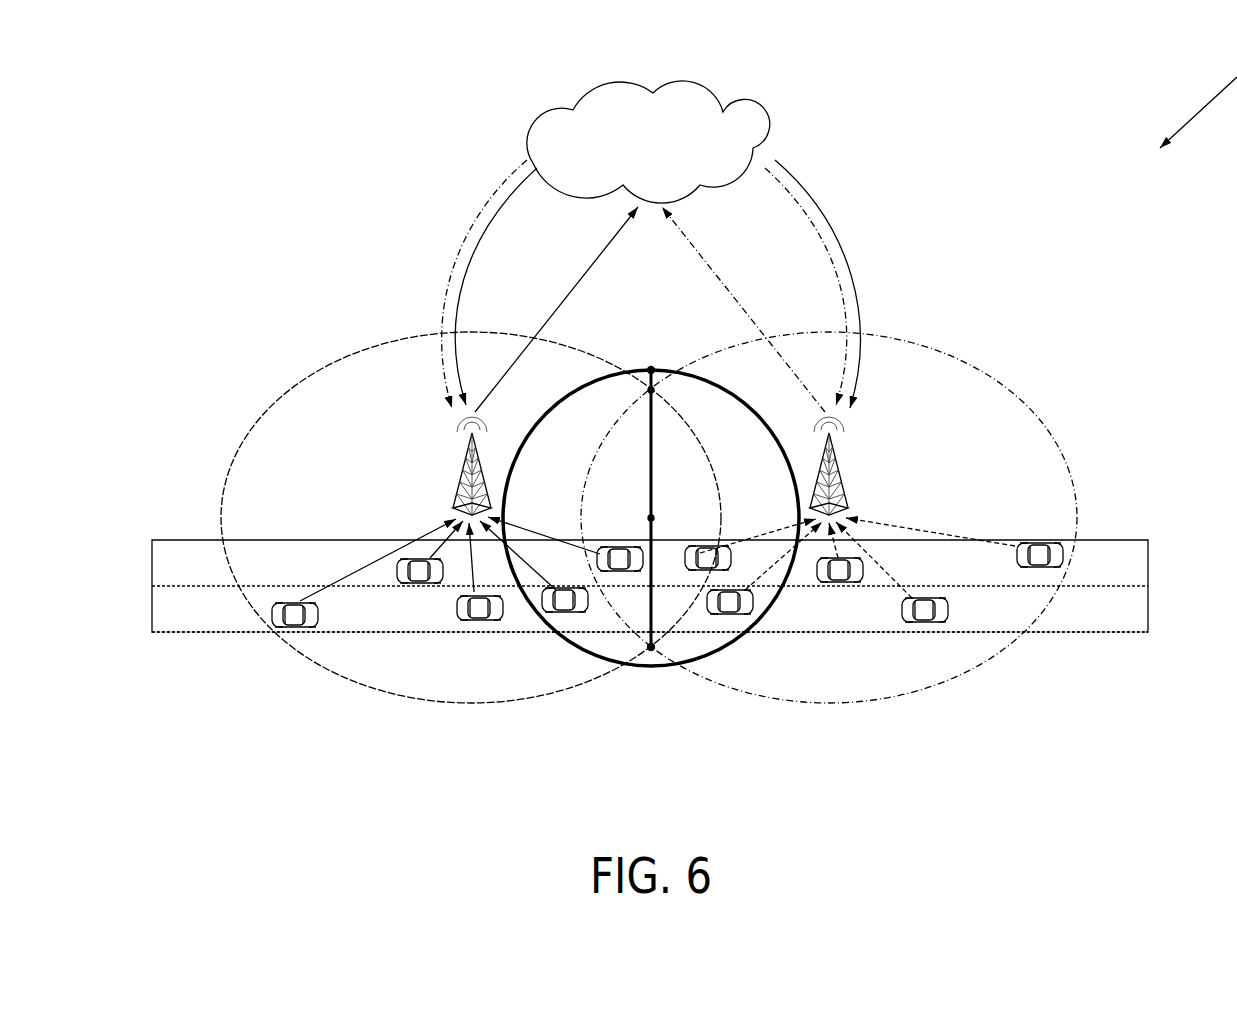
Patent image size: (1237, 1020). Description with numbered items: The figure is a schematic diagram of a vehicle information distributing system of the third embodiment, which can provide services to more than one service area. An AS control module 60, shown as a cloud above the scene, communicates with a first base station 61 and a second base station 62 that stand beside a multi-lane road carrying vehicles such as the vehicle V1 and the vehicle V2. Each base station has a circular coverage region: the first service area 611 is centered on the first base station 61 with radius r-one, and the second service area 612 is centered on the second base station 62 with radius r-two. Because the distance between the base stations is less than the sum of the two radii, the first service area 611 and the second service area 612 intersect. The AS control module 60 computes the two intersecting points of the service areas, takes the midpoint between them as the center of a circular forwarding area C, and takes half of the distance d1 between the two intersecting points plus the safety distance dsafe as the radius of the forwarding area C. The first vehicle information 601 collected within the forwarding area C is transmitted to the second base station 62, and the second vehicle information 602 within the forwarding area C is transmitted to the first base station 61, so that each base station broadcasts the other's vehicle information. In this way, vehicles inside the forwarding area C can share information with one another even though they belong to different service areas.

The AS control module 60 is at (693, 83).
The first vehicle information 601 is at (593, 258).
The second vehicle information 602 is at (727, 285).
The first base station 61 is at (463, 467).
The second base station 62 is at (841, 460).
The first service area 611 is at (375, 690).
The second service area 612 is at (933, 677).
The vehicle V1 is at (316, 647).
The second vehicle V2 is at (1036, 523).
The forwarding area C is at (651, 668).
The distance between the two intersecting points d1 is at (651, 391).
The safety distance dsafe is at (650, 370).